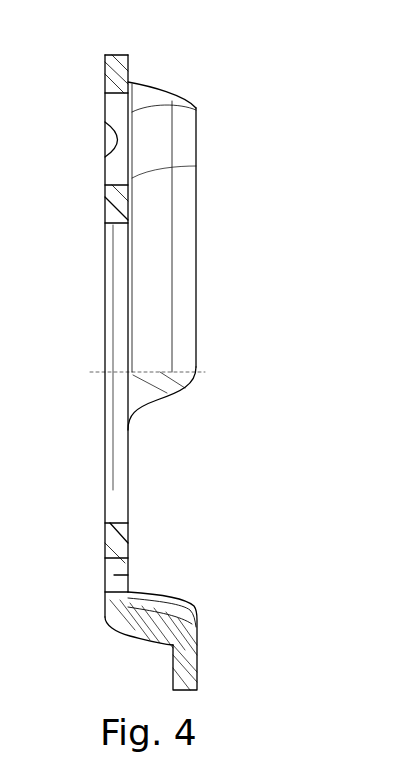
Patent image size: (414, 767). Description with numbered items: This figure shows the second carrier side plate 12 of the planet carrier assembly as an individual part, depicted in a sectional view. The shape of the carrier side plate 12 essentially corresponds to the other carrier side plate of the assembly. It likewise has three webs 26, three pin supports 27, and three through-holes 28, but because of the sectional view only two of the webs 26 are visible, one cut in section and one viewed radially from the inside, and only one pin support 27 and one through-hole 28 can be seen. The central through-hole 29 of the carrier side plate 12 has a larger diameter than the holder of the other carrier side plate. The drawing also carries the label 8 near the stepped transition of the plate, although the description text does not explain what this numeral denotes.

The second carrier side plate 12 is at (204, 372).
The pin support 27 is at (196, 100).
The web 26 is at (196, 280).
The transition step 8 is at (193, 372).
The through-hole 28 is at (129, 577).
The central through-hole 29 is at (103, 502).